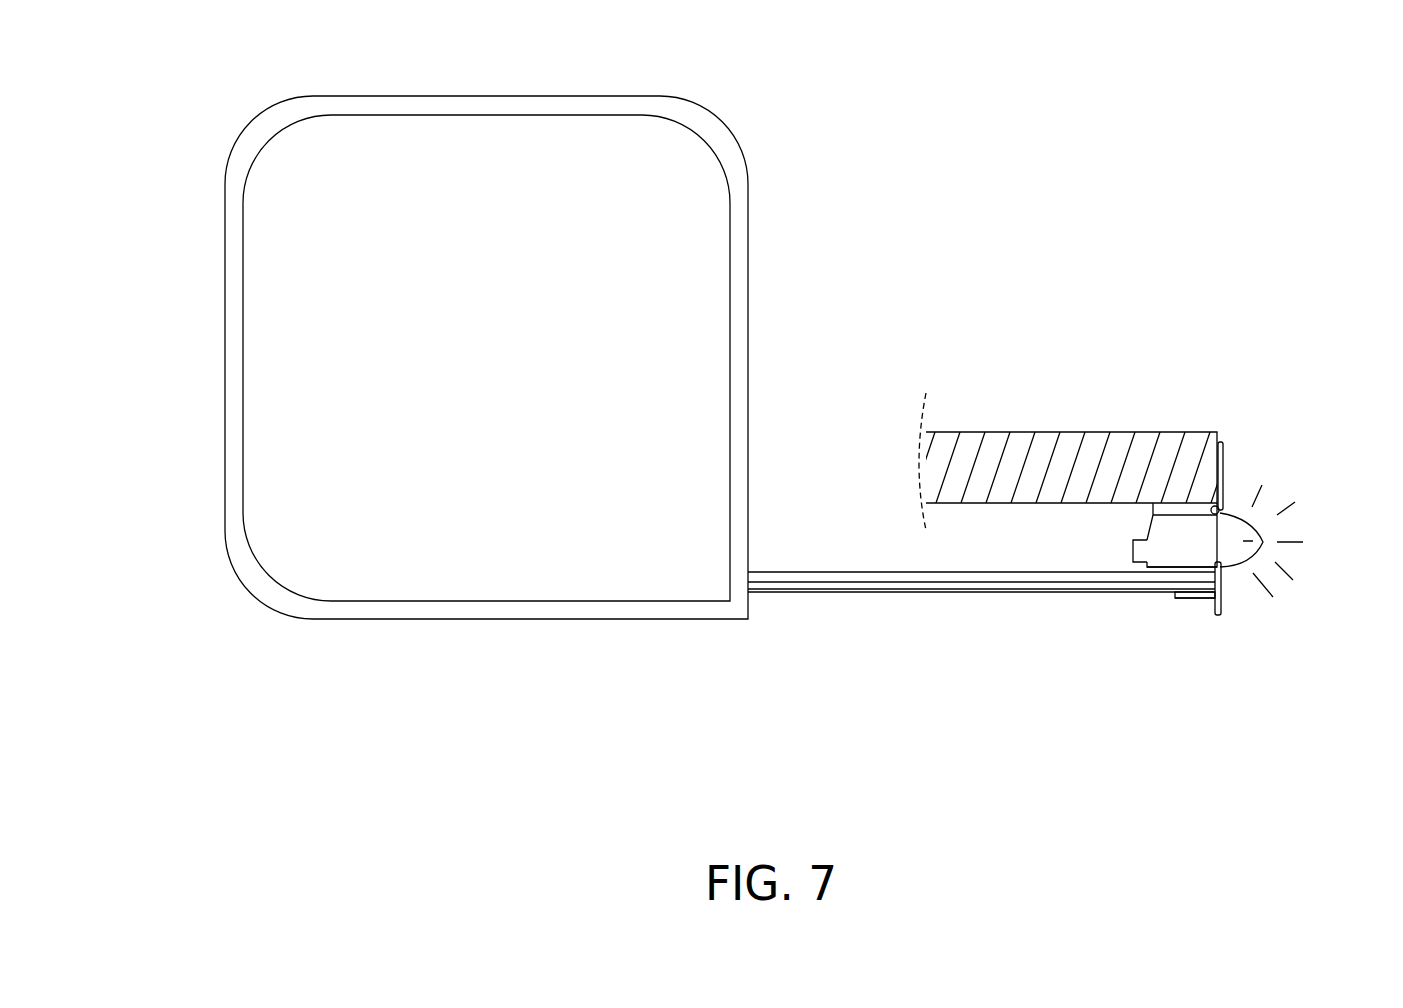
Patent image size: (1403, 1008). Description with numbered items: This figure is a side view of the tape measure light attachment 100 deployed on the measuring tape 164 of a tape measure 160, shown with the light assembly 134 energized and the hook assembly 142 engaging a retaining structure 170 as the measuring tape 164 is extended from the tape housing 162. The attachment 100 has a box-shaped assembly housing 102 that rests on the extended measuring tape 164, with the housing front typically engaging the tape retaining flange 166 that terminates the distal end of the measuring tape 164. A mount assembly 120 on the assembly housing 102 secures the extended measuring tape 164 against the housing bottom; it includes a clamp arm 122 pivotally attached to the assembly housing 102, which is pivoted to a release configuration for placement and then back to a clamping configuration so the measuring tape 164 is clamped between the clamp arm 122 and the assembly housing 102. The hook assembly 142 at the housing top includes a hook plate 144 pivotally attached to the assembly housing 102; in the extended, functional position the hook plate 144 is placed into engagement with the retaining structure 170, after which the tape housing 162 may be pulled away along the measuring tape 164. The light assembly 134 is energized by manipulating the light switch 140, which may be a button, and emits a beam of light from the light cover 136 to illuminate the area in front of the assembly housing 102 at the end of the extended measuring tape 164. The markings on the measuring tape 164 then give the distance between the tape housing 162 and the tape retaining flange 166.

The tape measure light attachment 100 is at (1260, 395).
The assembly housing 102 is at (1150, 575).
The mount assembly 120 is at (1178, 603).
The clamp arm 122 is at (1200, 600).
The light assembly 134 is at (1263, 533).
The light cover 136 is at (1262, 548).
The light switch 140 is at (1132, 551).
The hook assembly 142 is at (1229, 447).
The hook plate 144 is at (1228, 462).
The tape measure 160 is at (440, 96).
The tape housing 162 is at (288, 368).
The measuring tape 164 is at (970, 578).
The tape retaining flange 166 is at (1223, 607).
The retaining structure 170 is at (1018, 445).